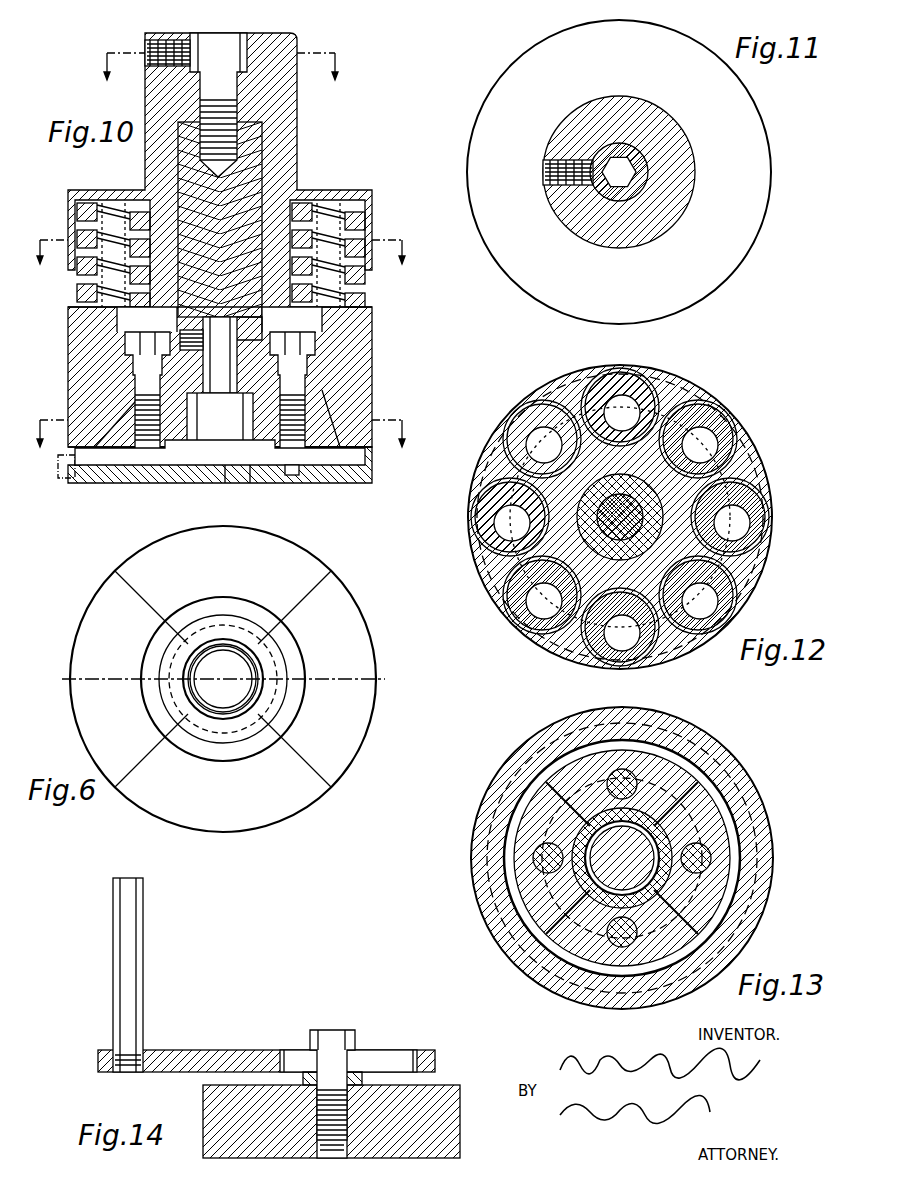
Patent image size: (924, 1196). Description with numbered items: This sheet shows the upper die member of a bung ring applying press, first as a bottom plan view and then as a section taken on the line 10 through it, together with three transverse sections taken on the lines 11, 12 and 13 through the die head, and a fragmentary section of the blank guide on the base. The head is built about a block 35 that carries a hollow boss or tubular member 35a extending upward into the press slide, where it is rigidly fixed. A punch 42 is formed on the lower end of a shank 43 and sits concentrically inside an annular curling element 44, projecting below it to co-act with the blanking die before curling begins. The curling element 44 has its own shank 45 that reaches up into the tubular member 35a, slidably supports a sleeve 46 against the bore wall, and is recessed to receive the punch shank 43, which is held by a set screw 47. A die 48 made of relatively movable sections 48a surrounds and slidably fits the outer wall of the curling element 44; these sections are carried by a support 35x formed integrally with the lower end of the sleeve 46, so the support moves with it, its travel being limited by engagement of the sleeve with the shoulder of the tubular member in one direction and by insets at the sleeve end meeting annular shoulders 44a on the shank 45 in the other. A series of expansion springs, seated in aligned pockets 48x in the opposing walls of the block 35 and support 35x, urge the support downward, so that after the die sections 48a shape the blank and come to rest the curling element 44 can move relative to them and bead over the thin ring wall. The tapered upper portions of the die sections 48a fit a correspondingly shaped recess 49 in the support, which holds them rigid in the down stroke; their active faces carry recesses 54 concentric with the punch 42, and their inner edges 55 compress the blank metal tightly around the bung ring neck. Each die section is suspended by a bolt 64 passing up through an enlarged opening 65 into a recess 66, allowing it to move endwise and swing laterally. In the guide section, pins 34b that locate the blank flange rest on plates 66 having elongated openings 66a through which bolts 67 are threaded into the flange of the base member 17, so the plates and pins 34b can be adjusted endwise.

In FIG. 6, the section line 10— 10 is at (227, 678).
In FIG. 10, the section line 11— 11 is at (219, 54).
In FIG. 10, the section line 12— 12 is at (222, 240).
In FIG. 10, the section line 13— 13 is at (222, 421).
In FIG. 14, the base member 17 is at (470, 1075).
In FIG. 14, the pins 34b is at (130, 976).
In FIG. 10, the block 35 is at (335, 200).
In FIG. 12, the block 35 is at (745, 470).
In FIG. 10, the tubular member 35a is at (283, 120).
In FIG. 10, the support 35x is at (362, 352).
In FIG. 13, the support 35x is at (745, 820).
In FIG. 10, the punch 42 is at (205, 470).
In FIG. 6, the punch 42 is at (238, 696).
In FIG. 10, the shank 43 is at (210, 318).
In FIG. 12, the shank 43 is at (634, 504).
In FIG. 10, the curling element 44 is at (250, 415).
In FIG. 6, the curling element 44 is at (265, 661).
In FIG. 10, the annular shoulders 44a is at (250, 322).
In FIG. 10, the shank 45 is at (192, 185).
In FIG. 10, the sleeve 46 is at (258, 160).
In FIG. 10, the set screw 47 is at (195, 368).
In FIG. 12, the set screw 47 is at (613, 514).
In FIG. 10, the die 48 is at (322, 478).
In FIG. 6, the die 48 is at (227, 679).
In FIG. 10, the die sections 48a is at (93, 480).
In FIG. 6, the die sections 48a is at (355, 641).
In FIG. 13, the die sections 48a is at (718, 884).
In FIG. 10, the pockets 48x is at (368, 208).
In FIG. 12, the pockets 48x is at (700, 590).
In FIG. 10, the recess 49 is at (310, 400).
In FIG. 10, the recesses 54 is at (292, 476).
In FIG. 10, the inner edges 55 is at (268, 470).
In FIG. 10, the bolt 64 is at (300, 370).
In FIG. 10, the opening 65 is at (140, 365).
In FIG. 10, the plates 66 is at (110, 320).
In FIG. 14, the plates 66 is at (180, 1060).
In FIG. 14, the elongated openings 66a is at (292, 1062).
In FIG. 14, the bolts 67 is at (330, 1118).